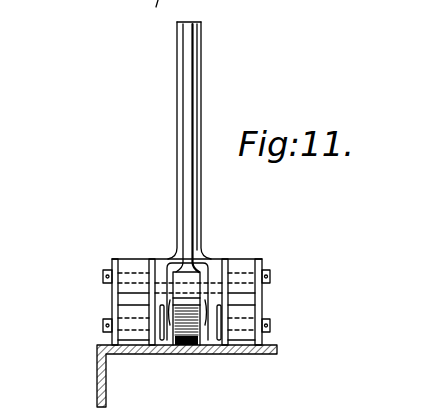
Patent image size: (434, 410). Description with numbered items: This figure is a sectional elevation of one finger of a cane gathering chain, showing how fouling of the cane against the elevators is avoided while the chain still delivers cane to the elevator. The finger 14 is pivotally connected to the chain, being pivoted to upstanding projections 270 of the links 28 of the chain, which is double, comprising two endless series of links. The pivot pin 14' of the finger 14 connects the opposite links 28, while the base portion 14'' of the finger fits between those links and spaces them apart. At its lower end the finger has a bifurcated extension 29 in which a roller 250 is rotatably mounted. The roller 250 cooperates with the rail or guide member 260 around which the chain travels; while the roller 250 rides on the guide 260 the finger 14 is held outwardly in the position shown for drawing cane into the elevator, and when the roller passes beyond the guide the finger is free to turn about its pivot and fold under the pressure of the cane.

The finger 14 is at (169, 147).
The pivot pin 14' is at (76, 301).
The base portion 14'' is at (148, 280).
The upstanding projections 270 is at (115, 258).
The bifurcated extension 29 is at (203, 260).
The links 28 is at (265, 311).
The roller 250 is at (181, 347).
The rail or guide member 260 is at (228, 355).